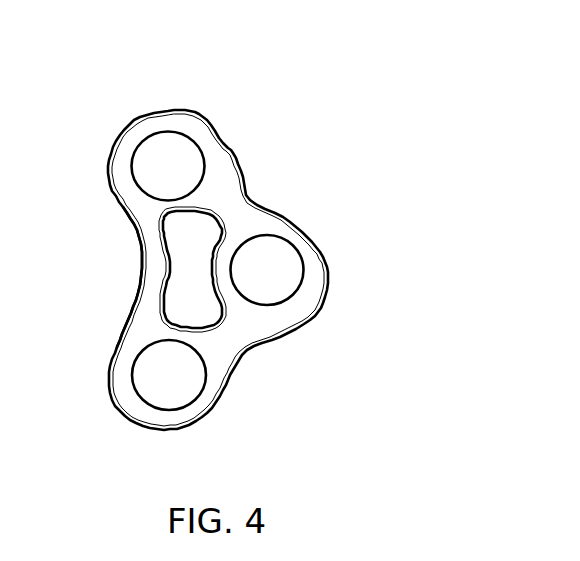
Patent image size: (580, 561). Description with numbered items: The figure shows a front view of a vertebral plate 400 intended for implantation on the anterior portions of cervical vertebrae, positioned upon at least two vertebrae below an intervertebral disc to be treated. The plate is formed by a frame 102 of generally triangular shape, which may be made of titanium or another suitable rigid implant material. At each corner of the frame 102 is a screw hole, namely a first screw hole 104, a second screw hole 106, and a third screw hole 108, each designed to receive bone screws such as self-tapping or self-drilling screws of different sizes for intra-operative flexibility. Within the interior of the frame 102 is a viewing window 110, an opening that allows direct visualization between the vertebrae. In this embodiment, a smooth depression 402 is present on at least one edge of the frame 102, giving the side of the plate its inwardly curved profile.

The vertebral plate 400 is at (209, 228).
The frame 102 is at (243, 186).
The first screw hole 104 is at (303, 260).
The second screw hole 106 is at (166, 131).
The third screw hole 108 is at (132, 375).
The viewing window 110 is at (183, 265).
The smooth depression 402 is at (123, 277).